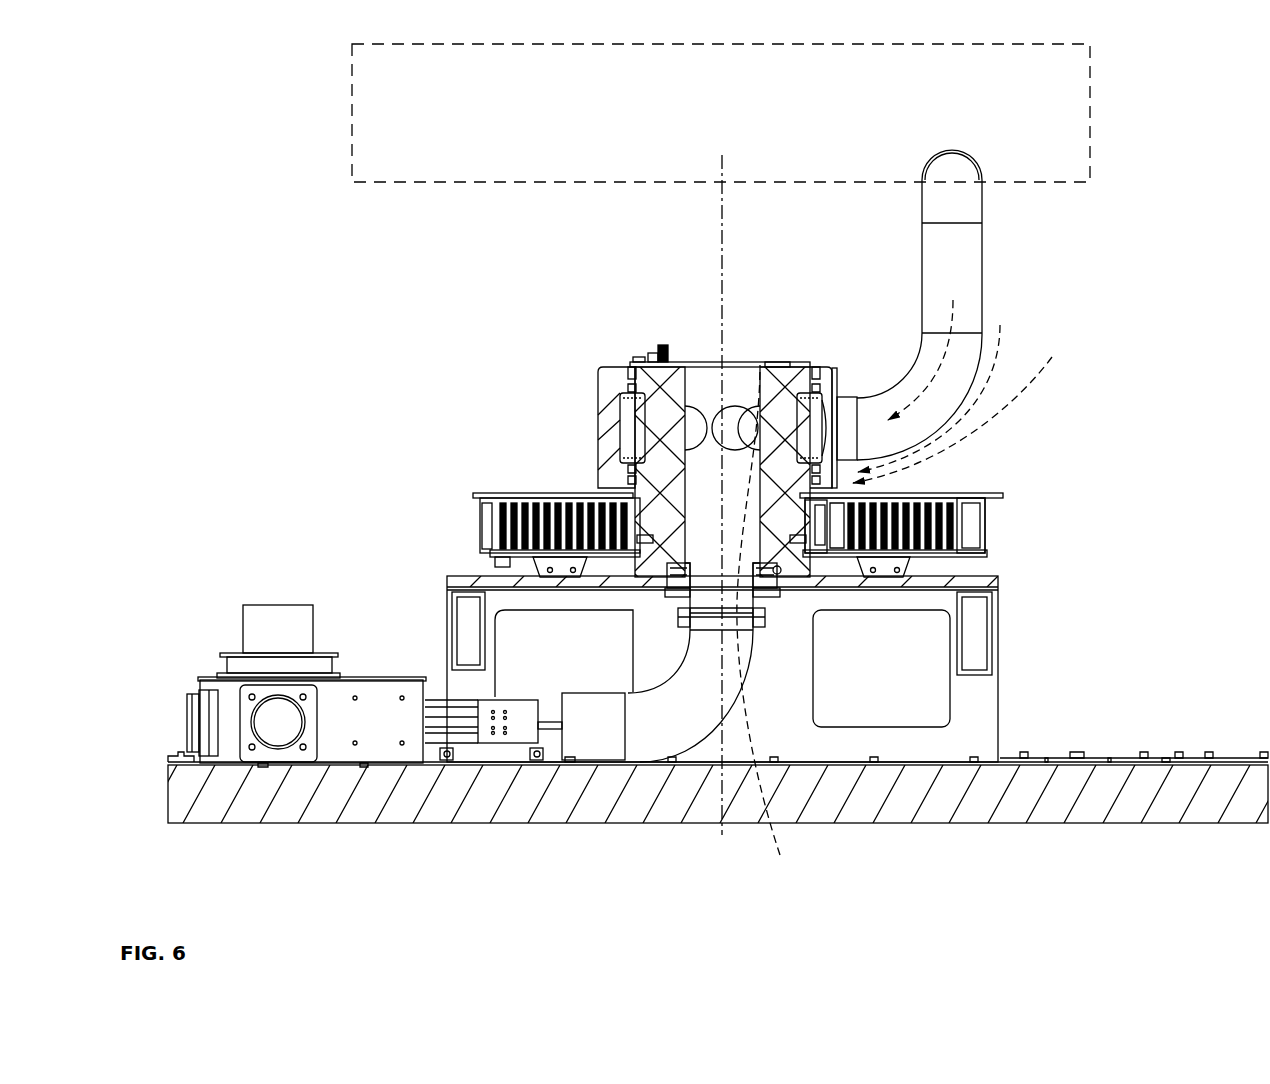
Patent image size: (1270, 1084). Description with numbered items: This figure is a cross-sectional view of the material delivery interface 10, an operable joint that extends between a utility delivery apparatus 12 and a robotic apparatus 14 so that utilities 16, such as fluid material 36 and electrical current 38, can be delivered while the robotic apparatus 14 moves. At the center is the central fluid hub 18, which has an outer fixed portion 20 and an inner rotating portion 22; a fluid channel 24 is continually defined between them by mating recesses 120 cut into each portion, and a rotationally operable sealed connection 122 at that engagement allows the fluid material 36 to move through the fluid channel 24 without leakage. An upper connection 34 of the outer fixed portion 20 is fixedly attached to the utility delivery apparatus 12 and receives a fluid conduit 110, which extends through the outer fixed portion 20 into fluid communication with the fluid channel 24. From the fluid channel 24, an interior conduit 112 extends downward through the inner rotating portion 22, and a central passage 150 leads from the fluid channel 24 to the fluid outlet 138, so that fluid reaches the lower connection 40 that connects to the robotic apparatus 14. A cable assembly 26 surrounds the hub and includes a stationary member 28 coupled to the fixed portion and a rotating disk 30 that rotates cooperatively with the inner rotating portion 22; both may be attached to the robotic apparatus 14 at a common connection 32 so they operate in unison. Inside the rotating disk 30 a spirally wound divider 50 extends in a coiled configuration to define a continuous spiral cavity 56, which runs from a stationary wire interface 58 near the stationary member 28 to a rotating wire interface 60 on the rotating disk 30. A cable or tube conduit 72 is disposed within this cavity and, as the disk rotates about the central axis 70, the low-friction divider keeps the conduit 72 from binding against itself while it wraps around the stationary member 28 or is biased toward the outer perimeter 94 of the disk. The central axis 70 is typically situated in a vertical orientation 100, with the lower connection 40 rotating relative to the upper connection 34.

The material delivery interface 10 is at (637, 323).
The utility delivery apparatus 12 is at (1094, 126).
The robotic apparatus 14 is at (492, 828).
The utilities 16 is at (967, 315).
The central fluid hub 18 is at (758, 338).
The outer fixed portion 20 is at (603, 382).
The inner rotating portion 22 is at (682, 363).
The fluid channel 24 is at (628, 417).
The cable assembly 26 is at (947, 483).
The stationary member 28 is at (785, 588).
The rotating disk 30 is at (972, 532).
The common connection 32 is at (823, 610).
The upper connection 34 is at (967, 406).
The fluid material 36 is at (928, 390).
The electrical current 38 is at (1000, 340).
The lower connection 40 is at (653, 597).
The spirally wound divider 50 is at (963, 495).
The continuous spiral cavity 56 is at (550, 490).
The stationary wire interface 58 is at (769, 629).
The rotating wire interface 60 is at (485, 515).
The central axis 70 is at (722, 213).
The conduit 72 is at (487, 532).
The outer perimeter 94 is at (968, 512).
The vertical orientation 100 is at (668, 833).
The fluid conduit 110 is at (963, 242).
The interior conduit 112 is at (757, 365).
The recess 120 is at (617, 452).
The sealed connection 122 is at (622, 362).
The fluid outlet 138 is at (705, 600).
The central passage 150 is at (700, 545).